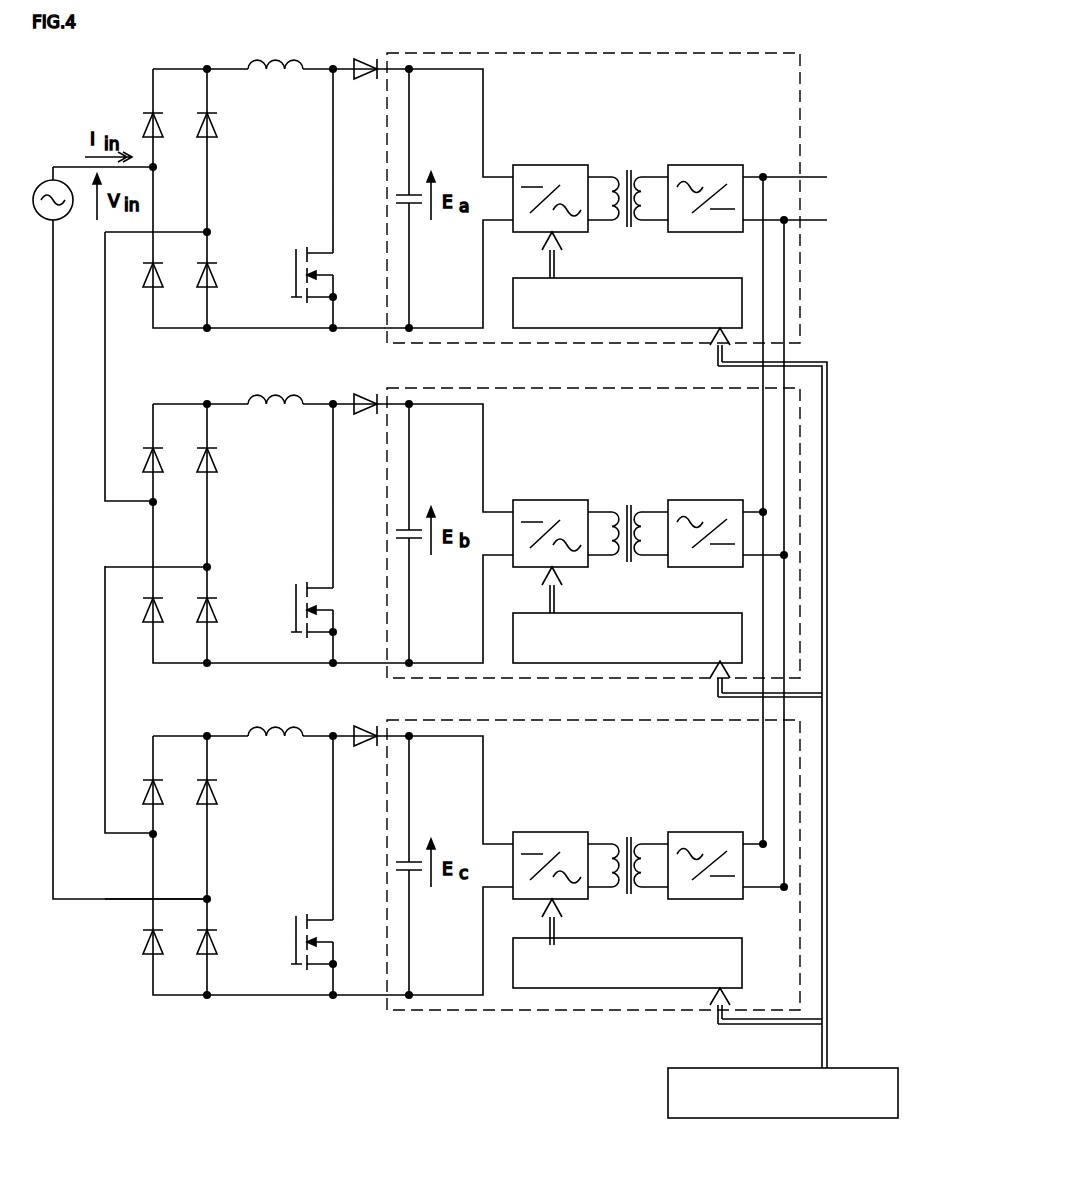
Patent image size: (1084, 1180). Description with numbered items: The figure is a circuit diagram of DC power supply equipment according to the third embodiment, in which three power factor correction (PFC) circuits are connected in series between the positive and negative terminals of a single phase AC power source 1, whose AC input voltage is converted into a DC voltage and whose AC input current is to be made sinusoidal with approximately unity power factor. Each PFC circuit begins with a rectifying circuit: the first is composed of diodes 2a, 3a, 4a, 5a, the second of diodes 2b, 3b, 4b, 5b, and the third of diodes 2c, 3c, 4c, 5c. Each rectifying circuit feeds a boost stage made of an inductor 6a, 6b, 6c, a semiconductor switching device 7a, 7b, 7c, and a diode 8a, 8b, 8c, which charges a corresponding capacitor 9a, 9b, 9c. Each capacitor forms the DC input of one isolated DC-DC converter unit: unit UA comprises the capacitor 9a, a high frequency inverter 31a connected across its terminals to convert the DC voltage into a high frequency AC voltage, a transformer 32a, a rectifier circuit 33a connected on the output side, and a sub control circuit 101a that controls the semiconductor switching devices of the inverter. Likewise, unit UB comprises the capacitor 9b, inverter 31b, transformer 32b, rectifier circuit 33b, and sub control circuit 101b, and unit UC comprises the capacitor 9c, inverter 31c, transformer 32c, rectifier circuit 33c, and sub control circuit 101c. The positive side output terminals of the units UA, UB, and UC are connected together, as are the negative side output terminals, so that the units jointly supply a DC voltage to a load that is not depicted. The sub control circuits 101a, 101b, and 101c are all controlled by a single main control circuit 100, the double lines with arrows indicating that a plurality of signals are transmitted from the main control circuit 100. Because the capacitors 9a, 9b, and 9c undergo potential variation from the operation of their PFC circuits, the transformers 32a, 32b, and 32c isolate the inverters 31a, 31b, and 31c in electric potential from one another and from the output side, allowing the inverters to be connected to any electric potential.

The single phase AC power source 1 is at (44, 180).
The diode 2a is at (146, 108).
The diode 2b is at (137, 435).
The diode 2c is at (137, 771).
The diode 3a is at (150, 260).
The diode 3b is at (136, 598).
The diode 3c is at (130, 929).
The diode 4a is at (200, 108).
The diode 4b is at (188, 441).
The diode 4c is at (189, 773).
The diode 5a is at (200, 260).
The diode 5b is at (188, 598).
The diode 5c is at (188, 928).
The inductor 6a is at (268, 60).
The inductor 6b is at (272, 377).
The inductor 6c is at (273, 709).
The semiconductor switching device 7a is at (298, 246).
The semiconductor switching device 7b is at (297, 587).
The semiconductor switching device 7c is at (300, 921).
The diode 8a is at (360, 56).
The diode 8b is at (349, 382).
The diode 8c is at (348, 717).
The capacitor 9a is at (402, 186).
The capacitor 9b is at (385, 533).
The capacitor 9c is at (386, 865).
The high frequency inverter 31a is at (542, 162).
The high frequency inverter 31b is at (550, 509).
The high frequency inverter 31c is at (550, 841).
The transformer 32a is at (626, 168).
The transformer 32b is at (628, 507).
The transformer 32c is at (628, 838).
The rectifier circuit 33a is at (708, 172).
The rectifier circuit 33b is at (705, 507).
The rectifier circuit 33c is at (705, 839).
The sub control circuit 101a is at (612, 282).
The sub control circuit 101b is at (627, 617).
The sub control circuit 101c is at (627, 940).
The main control circuit 100 is at (856, 1066).
The unit UA is at (800, 100).
The unit UB is at (633, 533).
The unit UC is at (634, 865).